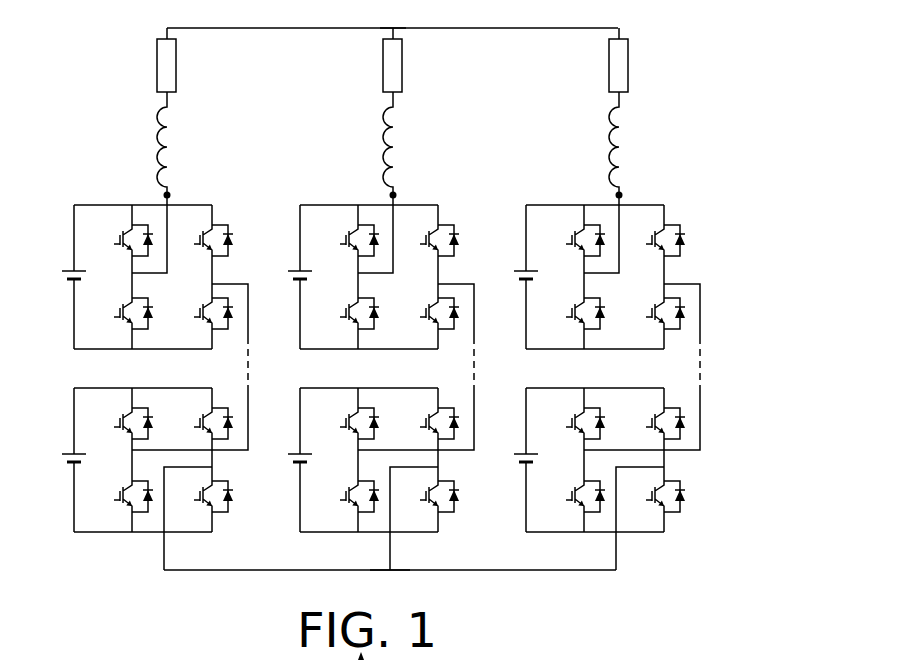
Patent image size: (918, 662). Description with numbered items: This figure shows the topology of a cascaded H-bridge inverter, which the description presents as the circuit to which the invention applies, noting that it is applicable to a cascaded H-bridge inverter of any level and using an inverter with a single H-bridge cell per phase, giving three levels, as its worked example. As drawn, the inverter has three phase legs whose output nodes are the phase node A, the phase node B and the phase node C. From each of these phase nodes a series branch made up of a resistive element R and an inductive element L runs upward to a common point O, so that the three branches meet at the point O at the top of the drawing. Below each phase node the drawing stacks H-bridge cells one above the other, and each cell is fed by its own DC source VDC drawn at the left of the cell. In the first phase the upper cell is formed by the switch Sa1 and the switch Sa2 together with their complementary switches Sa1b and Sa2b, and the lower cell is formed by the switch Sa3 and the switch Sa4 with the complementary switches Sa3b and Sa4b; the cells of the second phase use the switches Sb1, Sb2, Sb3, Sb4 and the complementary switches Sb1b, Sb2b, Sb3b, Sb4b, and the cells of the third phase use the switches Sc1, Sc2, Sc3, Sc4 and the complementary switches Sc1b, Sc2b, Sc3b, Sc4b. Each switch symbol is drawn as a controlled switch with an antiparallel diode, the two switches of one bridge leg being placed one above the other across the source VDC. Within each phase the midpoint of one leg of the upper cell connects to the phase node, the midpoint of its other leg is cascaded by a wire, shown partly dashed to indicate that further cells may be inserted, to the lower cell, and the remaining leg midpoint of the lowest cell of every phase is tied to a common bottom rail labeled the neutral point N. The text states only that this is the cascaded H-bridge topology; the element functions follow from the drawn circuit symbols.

The resistor R is at (402, 65).
The inductor L is at (401, 111).
The DC voltage source VDC is at (290, 380).
The phase A output node A is at (156, 194).
The phase B output node B is at (382, 194).
The phase C output node C is at (608, 194).
The load neutral node O is at (393, 17).
The converter neutral node N is at (390, 583).
The switch Sa1 is at (124, 249).
The switch Sa2 is at (205, 249).
The switch Sa3 is at (124, 432).
The switch Sa4 is at (205, 432).
The complementary switch Sa1-bar Sa1b is at (115, 318).
The complementary switch Sa2-bar Sa2b is at (192, 318).
The complementary switch Sa3-bar Sa3b is at (115, 502).
The complementary switch Sa4-bar Sa4b is at (192, 502).
The switch Sb1 is at (350, 249).
The switch Sb2 is at (431, 249).
The switch Sb3 is at (350, 432).
The switch Sb4 is at (431, 432).
The complementary switch Sb1-bar Sb1b is at (341, 318).
The complementary switch Sb2-bar Sb2b is at (418, 318).
The complementary switch Sb3-bar Sb3b is at (341, 502).
The complementary switch Sb4-bar Sb4b is at (418, 502).
The switch Sc1 is at (576, 249).
The switch Sc2 is at (657, 249).
The switch Sc3 is at (576, 432).
The switch Sc4 is at (657, 432).
The complementary switch Sc1-bar Sc1b is at (567, 318).
The complementary switch Sc2-bar Sc2b is at (644, 318).
The complementary switch Sc3-bar Sc3b is at (567, 502).
The complementary switch Sc4-bar Sc4b is at (644, 502).